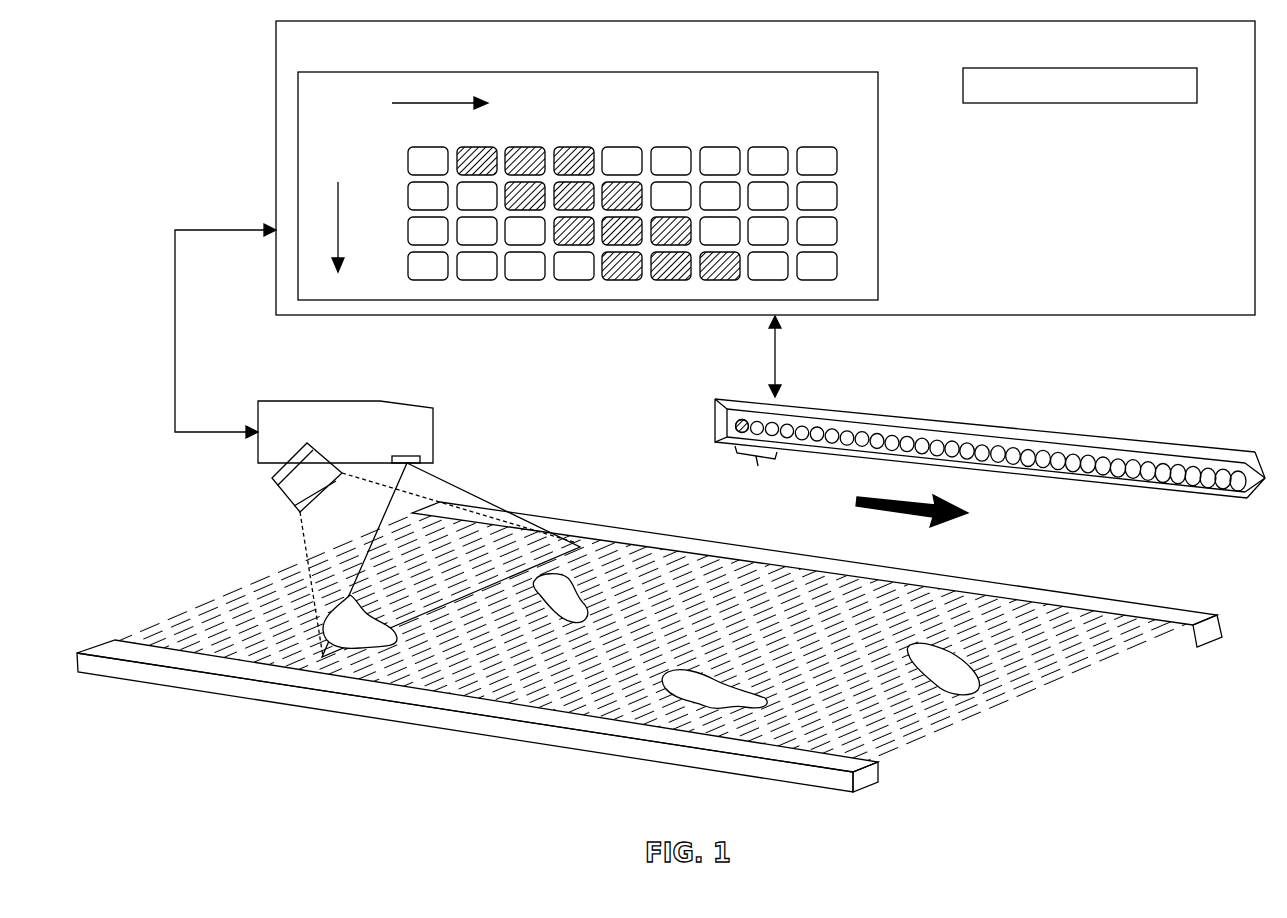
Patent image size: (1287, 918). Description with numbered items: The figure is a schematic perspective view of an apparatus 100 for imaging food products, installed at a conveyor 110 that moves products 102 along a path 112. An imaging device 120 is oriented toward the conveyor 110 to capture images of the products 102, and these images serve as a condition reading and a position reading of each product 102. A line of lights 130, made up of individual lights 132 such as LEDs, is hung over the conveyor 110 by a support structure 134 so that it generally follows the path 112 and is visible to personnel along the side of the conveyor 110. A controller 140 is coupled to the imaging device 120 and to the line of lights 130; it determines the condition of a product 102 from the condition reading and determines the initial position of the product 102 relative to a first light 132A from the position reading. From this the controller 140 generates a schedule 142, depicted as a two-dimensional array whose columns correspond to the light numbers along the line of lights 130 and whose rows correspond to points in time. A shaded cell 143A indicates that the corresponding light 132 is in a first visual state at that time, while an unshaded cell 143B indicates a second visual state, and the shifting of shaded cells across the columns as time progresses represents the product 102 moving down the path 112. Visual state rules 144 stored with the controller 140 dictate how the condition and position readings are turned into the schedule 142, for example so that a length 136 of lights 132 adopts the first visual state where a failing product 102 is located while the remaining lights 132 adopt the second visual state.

The apparatus 100 is at (165, 145).
The products 102 is at (567, 585).
The conveyor 110 is at (168, 575).
The path 112 is at (857, 503).
The imaging device 120 is at (238, 484).
The line of lights 130 is at (943, 424).
The lights 132 is at (1078, 460).
The first light 132A is at (742, 426).
The support structure 134 is at (880, 415).
The length of lights 136 is at (752, 470).
The controller 140 is at (765, 168).
The schedule 142 is at (588, 186).
The shaded cell 143A is at (643, 195).
The unshaded cell 143B is at (643, 158).
The visual state rules 144 is at (1010, 105).